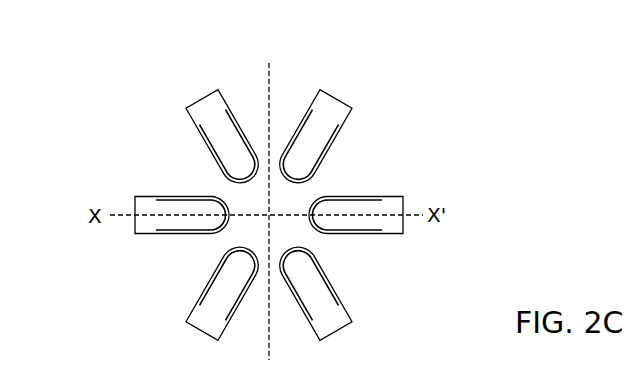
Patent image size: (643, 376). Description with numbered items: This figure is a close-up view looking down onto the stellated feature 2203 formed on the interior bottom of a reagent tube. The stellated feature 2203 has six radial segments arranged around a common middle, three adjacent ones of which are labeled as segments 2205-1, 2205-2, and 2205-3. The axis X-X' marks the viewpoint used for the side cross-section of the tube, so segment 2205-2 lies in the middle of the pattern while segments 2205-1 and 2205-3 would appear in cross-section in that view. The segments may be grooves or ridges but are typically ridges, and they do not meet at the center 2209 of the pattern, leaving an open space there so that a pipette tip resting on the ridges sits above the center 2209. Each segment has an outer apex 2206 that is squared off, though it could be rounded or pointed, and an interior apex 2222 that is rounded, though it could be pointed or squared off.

The stellated feature 2203 is at (315, 50).
The apex of segment 2206 is at (206, 100).
The interior apex of segment 2222 is at (243, 191).
The center of the stellated pattern 2209 is at (268, 218).
The radial segment 2205-1 is at (327, 107).
The radial segment 2205-2 is at (377, 222).
The radial segment 2205-3 is at (335, 318).